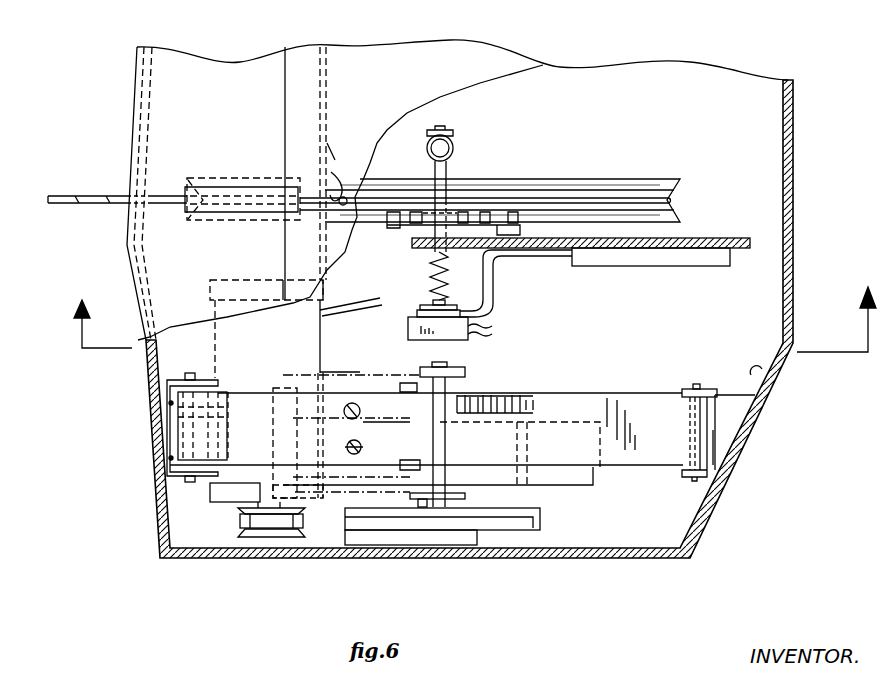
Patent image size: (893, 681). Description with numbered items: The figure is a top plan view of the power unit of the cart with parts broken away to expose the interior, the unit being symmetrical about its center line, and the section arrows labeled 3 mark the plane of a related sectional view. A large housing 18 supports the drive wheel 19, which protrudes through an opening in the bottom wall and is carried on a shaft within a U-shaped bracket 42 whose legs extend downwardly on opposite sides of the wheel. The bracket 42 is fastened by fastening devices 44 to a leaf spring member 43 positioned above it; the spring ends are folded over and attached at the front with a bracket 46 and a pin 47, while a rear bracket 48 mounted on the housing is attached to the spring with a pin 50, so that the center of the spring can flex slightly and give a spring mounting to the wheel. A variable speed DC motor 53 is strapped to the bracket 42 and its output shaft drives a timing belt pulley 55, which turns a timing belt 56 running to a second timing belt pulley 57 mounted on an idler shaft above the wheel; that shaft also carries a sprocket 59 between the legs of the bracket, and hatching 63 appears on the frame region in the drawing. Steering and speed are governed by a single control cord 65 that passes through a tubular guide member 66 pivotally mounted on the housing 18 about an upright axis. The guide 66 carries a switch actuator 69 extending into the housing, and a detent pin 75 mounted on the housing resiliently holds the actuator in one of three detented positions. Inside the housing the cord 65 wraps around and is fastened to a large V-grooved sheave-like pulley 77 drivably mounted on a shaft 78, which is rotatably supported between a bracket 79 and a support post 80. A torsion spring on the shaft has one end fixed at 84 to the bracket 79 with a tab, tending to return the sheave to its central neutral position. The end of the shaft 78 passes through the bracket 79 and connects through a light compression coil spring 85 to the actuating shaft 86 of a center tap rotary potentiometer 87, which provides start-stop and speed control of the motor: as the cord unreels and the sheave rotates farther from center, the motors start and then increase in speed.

The section line 3- 3 is at (475, 309).
The housing 18 is at (795, 247).
The drive wheel 19 is at (578, 475).
The U-shaped bracket 42 is at (440, 397).
The leaf spring member 43 is at (607, 412).
The fastening devices 44 is at (352, 403).
The front bracket 46 is at (172, 380).
The pin 47 is at (200, 378).
The rear bracket 48 is at (701, 390).
The pin 50 is at (694, 384).
The motor 53 is at (320, 348).
The timing belt pulley 55 is at (240, 538).
The timing belt 56 is at (313, 522).
The timing belt pulley 57 is at (535, 508).
The sprocket 59 is at (435, 403).
The friction pad 63 is at (530, 398).
The control cord 65 is at (72, 195).
The guide member 66 is at (228, 190).
The switch actuator 69 is at (331, 172).
The detent pin 75 is at (347, 198).
The sheave-like pulley 77 is at (578, 188).
The shaft 78 is at (448, 170).
The bracket 79 is at (690, 246).
The support post 80 is at (452, 140).
The tab fixing point 84 is at (515, 232).
The compression coil spring 85 is at (430, 270).
The actuating shaft 86 is at (445, 308).
The center tap rotary potentiometer 87 is at (470, 332).